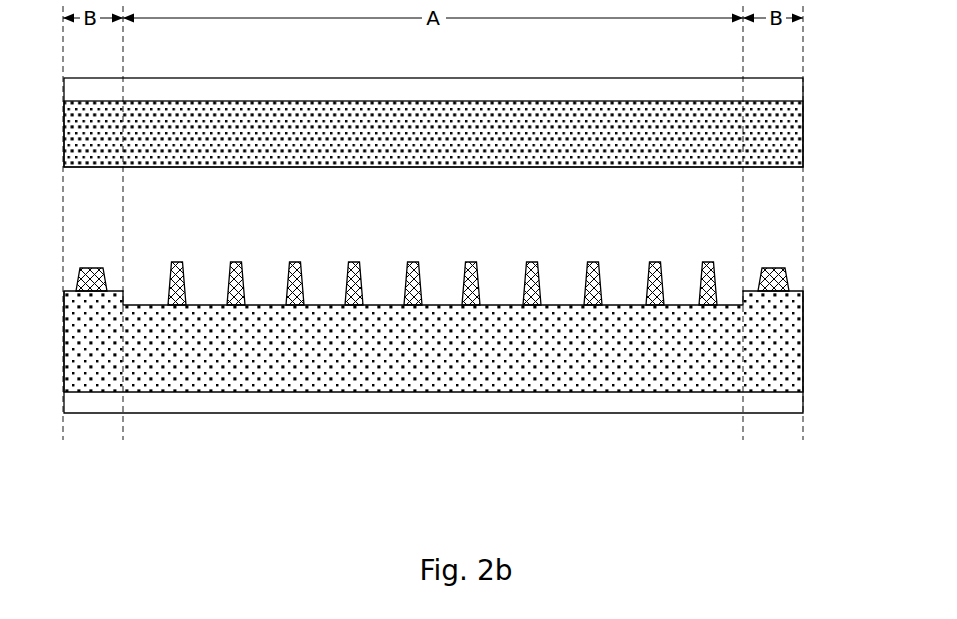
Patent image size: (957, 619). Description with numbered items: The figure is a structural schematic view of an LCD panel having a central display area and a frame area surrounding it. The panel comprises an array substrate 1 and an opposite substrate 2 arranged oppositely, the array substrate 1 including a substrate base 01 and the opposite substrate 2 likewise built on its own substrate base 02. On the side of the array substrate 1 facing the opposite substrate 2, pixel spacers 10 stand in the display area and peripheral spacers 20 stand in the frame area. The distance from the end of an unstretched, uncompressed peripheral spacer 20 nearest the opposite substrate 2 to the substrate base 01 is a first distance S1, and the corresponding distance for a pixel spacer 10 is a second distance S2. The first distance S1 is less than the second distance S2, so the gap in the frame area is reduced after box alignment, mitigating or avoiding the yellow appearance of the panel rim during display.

The substrate base of the opposite substrate 02 is at (317, 90).
The opposite substrate 2 is at (403, 128).
The substrate base 01 is at (288, 406).
The array substrate 1 is at (345, 355).
The pixel spacers 10 is at (593, 305).
The peripheral spacers 20 is at (783, 273).
The first distance S1 is at (773, 291).
The second distance S2 is at (655, 305).